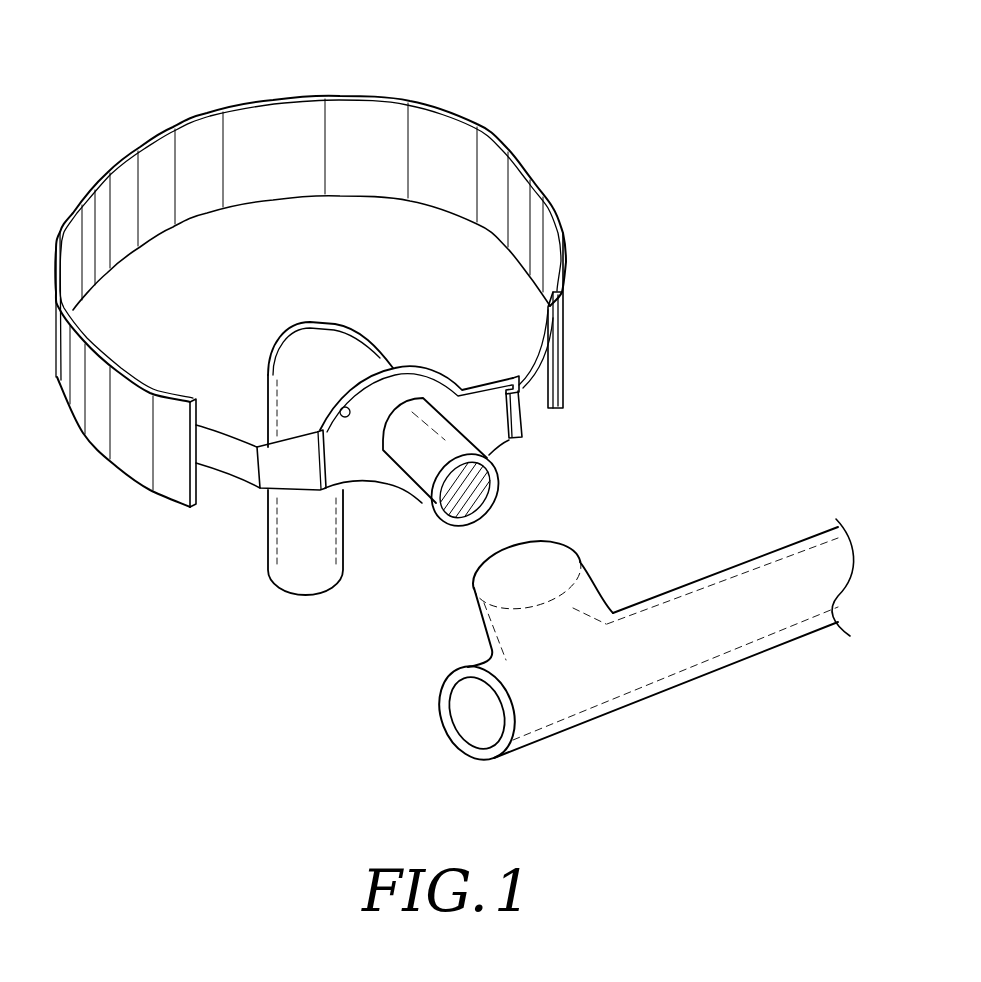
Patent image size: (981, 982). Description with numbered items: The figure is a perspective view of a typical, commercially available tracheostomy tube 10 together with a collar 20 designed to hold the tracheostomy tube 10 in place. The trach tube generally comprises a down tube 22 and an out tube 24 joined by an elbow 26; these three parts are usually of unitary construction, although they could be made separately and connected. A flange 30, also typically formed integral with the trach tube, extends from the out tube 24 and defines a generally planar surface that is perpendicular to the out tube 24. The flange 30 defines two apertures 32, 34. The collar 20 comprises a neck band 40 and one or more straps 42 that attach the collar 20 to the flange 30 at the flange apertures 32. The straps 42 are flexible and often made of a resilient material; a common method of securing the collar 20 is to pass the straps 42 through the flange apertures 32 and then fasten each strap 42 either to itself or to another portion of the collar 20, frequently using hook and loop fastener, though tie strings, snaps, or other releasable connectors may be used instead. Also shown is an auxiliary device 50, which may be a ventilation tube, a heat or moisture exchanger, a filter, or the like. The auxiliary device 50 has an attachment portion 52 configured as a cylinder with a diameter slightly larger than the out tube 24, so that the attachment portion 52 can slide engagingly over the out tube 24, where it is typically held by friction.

The tracheostomy tube 10 is at (395, 332).
The collar 20 is at (471, 104).
The down tube 22 is at (296, 538).
The out tube 24 is at (433, 463).
The elbow 26 is at (303, 357).
The flange 30 is at (500, 437).
The flange aperture 32 is at (508, 378).
The flange aperture 34 is at (317, 432).
The neck band 40 is at (201, 140).
The strap 42 is at (535, 398).
The auxiliary device 50 is at (655, 699).
The attachment portion 52 is at (495, 588).